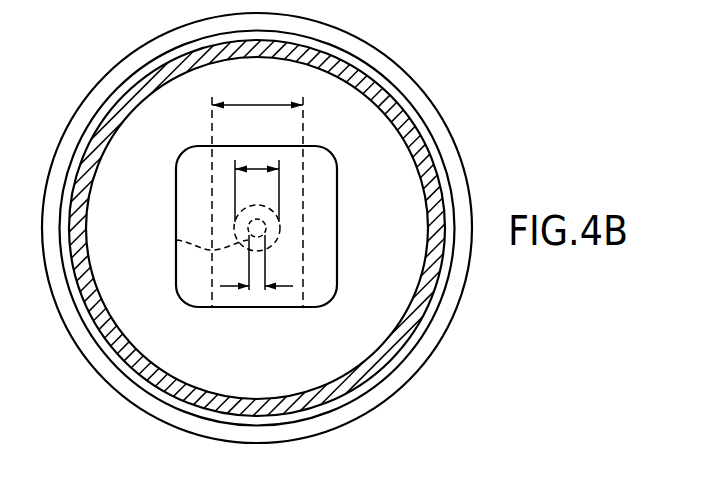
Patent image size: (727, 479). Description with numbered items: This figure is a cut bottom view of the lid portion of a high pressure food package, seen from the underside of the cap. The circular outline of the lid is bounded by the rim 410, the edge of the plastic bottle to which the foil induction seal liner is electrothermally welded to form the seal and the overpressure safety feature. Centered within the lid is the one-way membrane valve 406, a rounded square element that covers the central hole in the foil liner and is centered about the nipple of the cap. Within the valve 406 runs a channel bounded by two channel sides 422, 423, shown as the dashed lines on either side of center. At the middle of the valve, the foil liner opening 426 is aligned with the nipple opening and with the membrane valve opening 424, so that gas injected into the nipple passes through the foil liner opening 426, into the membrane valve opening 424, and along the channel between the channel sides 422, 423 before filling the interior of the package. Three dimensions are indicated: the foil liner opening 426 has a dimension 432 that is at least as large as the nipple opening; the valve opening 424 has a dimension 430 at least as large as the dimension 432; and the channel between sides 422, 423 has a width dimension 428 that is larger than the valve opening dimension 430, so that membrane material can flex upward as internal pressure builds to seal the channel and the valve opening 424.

The one-way membrane valve 406 is at (337, 187).
The rim 410 is at (125, 327).
The channel side 422 is at (322, 268).
The channel side 423 is at (190, 181).
The membrane valve opening 424 is at (176, 240).
The foil liner opening 426 is at (279, 238).
The channel width dimension 428 is at (247, 104).
The valve opening dimension 430 is at (258, 167).
The foil liner opening dimension 432 is at (258, 308).